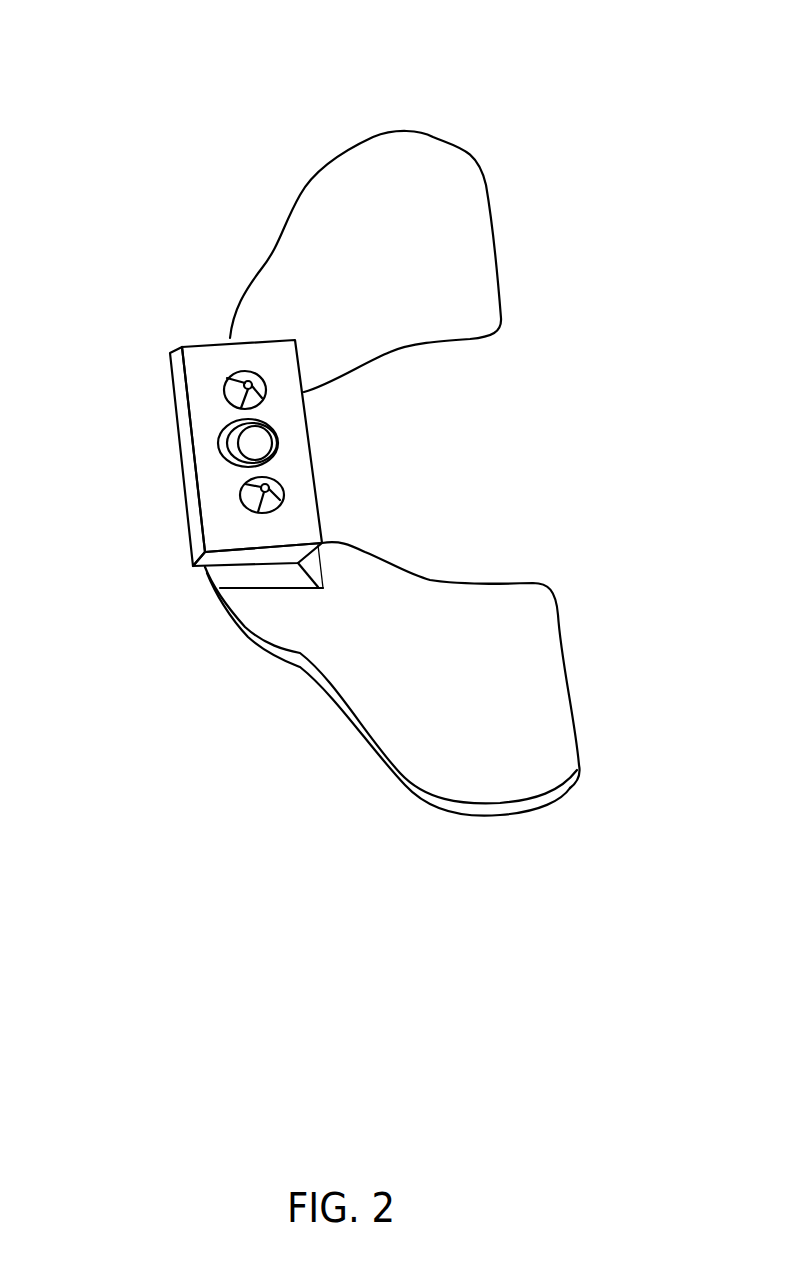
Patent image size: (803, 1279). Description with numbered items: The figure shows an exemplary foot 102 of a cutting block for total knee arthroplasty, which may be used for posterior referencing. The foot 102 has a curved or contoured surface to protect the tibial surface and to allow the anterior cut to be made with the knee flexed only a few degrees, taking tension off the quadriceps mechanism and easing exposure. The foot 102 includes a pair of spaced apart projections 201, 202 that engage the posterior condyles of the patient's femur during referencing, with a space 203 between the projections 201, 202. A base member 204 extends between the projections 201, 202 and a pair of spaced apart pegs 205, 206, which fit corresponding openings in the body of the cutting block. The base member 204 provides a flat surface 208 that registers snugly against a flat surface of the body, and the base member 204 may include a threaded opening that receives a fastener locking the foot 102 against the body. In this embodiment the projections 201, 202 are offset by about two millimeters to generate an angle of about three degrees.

The foot 102 is at (157, 56).
The projection 201 is at (457, 221).
The projection 202 is at (487, 708).
The space 203 is at (469, 463).
The base member 204 is at (183, 549).
The peg 205 is at (238, 500).
The peg 206 is at (225, 387).
The flat surface 208 is at (195, 422).